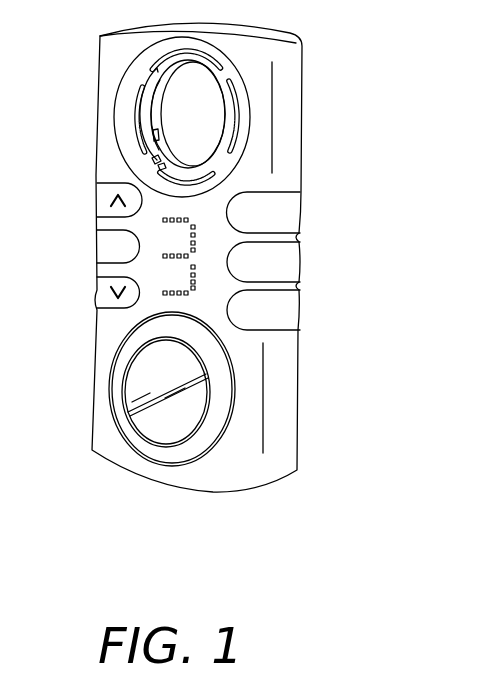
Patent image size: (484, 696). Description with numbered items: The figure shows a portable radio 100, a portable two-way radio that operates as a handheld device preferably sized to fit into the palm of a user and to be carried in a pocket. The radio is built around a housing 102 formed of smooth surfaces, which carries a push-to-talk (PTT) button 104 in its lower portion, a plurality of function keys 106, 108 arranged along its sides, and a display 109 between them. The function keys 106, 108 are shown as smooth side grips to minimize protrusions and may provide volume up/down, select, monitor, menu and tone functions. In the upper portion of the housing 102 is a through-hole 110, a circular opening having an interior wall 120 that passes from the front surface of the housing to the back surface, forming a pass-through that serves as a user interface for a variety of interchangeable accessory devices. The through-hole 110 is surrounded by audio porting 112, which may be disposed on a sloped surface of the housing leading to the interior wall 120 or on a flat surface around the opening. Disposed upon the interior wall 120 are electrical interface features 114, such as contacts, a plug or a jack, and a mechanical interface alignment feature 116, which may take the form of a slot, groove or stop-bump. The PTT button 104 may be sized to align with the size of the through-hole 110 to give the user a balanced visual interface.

The portable radio 100 is at (244, 292).
The housing 102 is at (297, 378).
The push-to-talk (PTT) button 104 is at (123, 386).
The function keys 106 is at (97, 248).
The function keys 108 is at (297, 260).
The display 109 is at (175, 275).
The through-hole 110 is at (218, 158).
The audio porting 112 is at (152, 167).
The electrical interface features 114 is at (152, 135).
The mechanical interface alignment feature 116 is at (157, 103).
The interior wall 120 is at (163, 76).